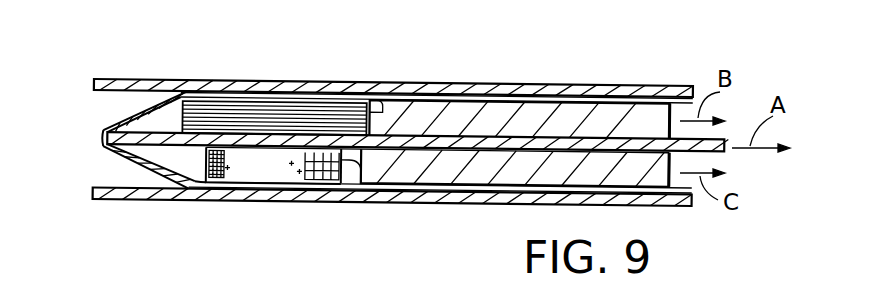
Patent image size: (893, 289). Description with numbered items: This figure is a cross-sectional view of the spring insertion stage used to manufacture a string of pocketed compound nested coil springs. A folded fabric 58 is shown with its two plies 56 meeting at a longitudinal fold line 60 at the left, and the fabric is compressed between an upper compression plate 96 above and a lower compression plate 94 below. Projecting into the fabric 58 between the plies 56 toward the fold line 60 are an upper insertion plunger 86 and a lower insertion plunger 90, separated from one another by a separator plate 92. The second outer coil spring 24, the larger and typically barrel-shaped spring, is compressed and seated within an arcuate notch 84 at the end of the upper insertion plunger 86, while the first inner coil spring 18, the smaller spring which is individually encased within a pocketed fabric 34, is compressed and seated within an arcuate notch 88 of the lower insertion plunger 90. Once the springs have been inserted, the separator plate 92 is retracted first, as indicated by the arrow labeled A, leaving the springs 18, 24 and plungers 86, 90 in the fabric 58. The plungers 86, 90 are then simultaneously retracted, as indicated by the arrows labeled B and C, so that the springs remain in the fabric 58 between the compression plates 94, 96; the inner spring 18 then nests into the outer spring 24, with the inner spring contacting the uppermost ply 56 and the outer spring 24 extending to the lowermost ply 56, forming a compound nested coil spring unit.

The upper compression plate 96 is at (160, 79).
The plies 56 is at (460, 93).
The arcuate notch 84 is at (386, 96).
The lower insertion plunger 90 is at (660, 192).
The second outer coil spring 24 is at (305, 93).
The upper insertion plunger 86 is at (557, 113).
The separator plate 92 is at (627, 144).
The arcuate notch 88 is at (352, 192).
The pocketed fabric 34 is at (258, 170).
The first inner coil spring 18 is at (200, 165).
The folded fabric 58 is at (110, 161).
The longitudinal fold line 60 is at (108, 133).
The lower compression plate 94 is at (204, 200).